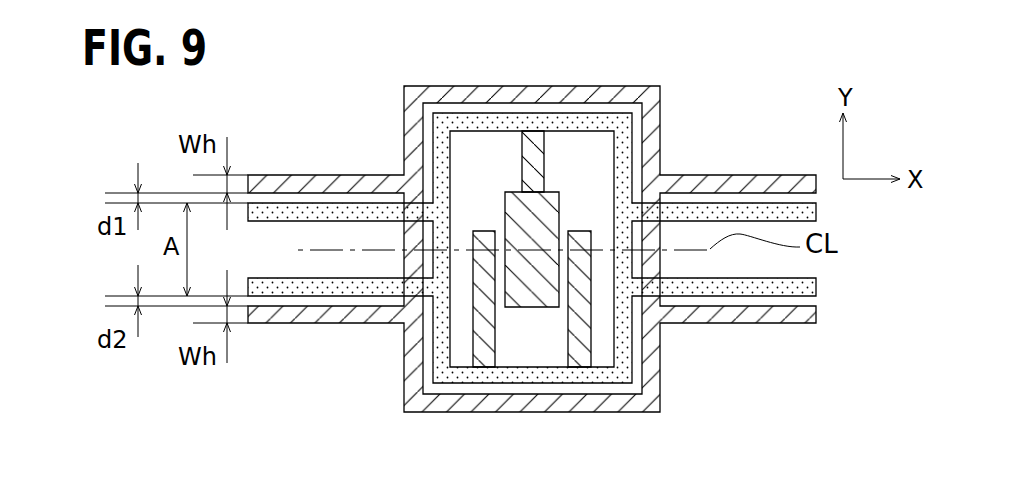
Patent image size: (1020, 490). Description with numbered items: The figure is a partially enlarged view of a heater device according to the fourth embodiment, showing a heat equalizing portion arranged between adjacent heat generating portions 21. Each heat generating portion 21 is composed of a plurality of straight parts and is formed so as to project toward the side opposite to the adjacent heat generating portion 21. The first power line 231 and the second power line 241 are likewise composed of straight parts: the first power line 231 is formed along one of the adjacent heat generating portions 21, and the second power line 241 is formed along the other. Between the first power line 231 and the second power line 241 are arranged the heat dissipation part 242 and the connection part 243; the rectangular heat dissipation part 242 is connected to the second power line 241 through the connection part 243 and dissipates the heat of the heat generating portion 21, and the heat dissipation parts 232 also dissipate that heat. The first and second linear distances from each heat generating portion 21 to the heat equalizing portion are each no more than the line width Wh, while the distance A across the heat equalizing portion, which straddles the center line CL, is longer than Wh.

The heat generating portion 21 is at (559, 86).
The second power line 241 is at (597, 114).
The first power line 231 is at (572, 383).
The heat dissipation part 242 is at (559, 203).
The connection part 243 is at (544, 164).
The heat dissipation part 232 is at (592, 318).